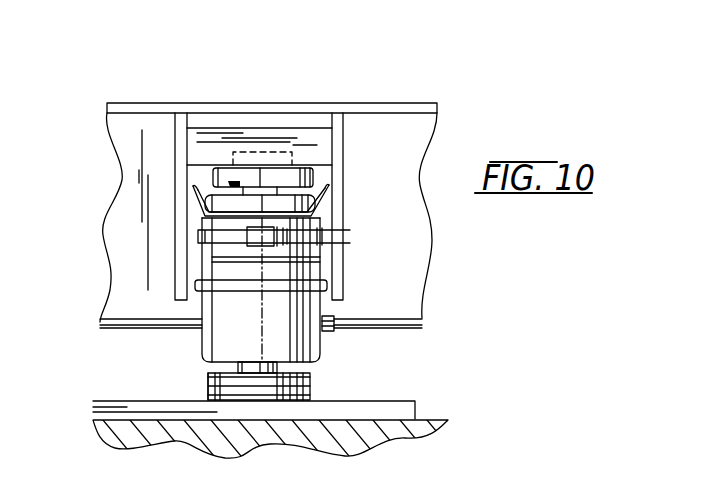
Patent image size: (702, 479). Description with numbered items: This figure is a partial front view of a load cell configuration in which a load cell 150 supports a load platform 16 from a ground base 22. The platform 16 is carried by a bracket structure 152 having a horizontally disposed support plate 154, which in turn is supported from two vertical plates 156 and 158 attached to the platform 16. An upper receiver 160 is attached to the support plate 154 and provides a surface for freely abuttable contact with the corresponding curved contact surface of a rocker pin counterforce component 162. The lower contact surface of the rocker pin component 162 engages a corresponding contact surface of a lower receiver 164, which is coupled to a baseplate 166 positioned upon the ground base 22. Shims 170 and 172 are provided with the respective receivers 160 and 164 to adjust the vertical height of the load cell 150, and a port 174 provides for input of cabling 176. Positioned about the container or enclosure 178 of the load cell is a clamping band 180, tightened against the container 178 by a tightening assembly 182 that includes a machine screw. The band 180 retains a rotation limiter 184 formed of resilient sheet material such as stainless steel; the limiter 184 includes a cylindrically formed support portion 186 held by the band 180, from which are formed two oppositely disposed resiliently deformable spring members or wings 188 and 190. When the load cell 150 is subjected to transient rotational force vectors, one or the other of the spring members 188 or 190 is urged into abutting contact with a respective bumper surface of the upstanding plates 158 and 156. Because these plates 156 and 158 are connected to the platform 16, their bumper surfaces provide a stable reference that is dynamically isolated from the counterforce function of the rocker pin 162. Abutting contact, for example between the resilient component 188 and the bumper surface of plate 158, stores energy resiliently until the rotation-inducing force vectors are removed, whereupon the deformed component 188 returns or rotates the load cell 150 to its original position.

The load platform 16 is at (446, 138).
The ground base 22 is at (438, 420).
The load cell 150 is at (194, 346).
The bracket structure 152 is at (322, 89).
The support plate 154 is at (303, 137).
The vertical plate 156 is at (166, 127).
The vertical plate 158 is at (348, 133).
The upper receiver 160 is at (205, 176).
The rocker pin counterforce component 162 is at (313, 190).
The lower receiver 164 is at (312, 381).
The baseplate 166 is at (392, 402).
The shim 170 is at (272, 190).
The shim 172 is at (205, 397).
The port 174 is at (327, 332).
The cabling 176 is at (400, 329).
The container 178 is at (227, 330).
The clamping band 180 is at (205, 238).
The tightening assembly 182 is at (325, 233).
The rotation limiter 184 is at (205, 226).
The support portion 186 is at (333, 269).
The spring member 188 is at (328, 189).
The spring member 190 is at (193, 208).